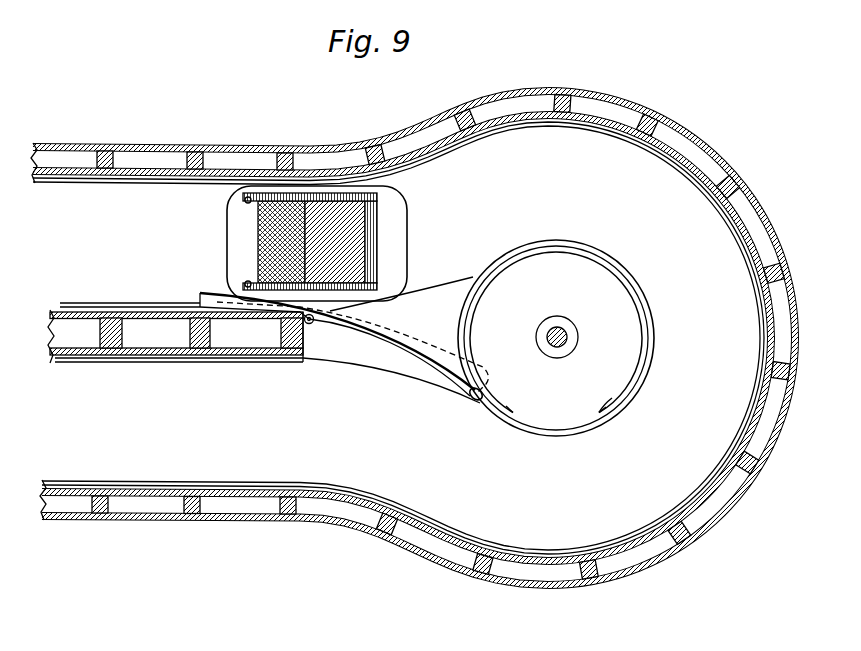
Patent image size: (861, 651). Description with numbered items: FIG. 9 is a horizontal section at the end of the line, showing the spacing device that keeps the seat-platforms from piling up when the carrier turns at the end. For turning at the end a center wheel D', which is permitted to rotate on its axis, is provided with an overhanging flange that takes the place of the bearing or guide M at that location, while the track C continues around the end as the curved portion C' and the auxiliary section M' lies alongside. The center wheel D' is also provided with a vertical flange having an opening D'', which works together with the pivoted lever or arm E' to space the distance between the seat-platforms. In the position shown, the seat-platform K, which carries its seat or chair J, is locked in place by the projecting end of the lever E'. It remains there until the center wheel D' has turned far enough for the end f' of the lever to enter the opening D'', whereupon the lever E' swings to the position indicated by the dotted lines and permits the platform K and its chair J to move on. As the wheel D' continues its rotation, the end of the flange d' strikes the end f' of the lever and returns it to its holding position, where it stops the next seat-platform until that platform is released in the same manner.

The guide track C is at (289, 338).
The curved portion of guide track C' is at (671, 338).
The bearing or guide M is at (398, 338).
The movable track section M' is at (175, 349).
The seat-platform K is at (402, 246).
The seat or chair J is at (310, 241).
The center wheel D' is at (556, 338).
The opening in vertical flange D'' is at (556, 334).
The end of flange d' is at (600, 398).
The lever or arm E' is at (344, 340).
The contact end of lever arm f' is at (468, 409).